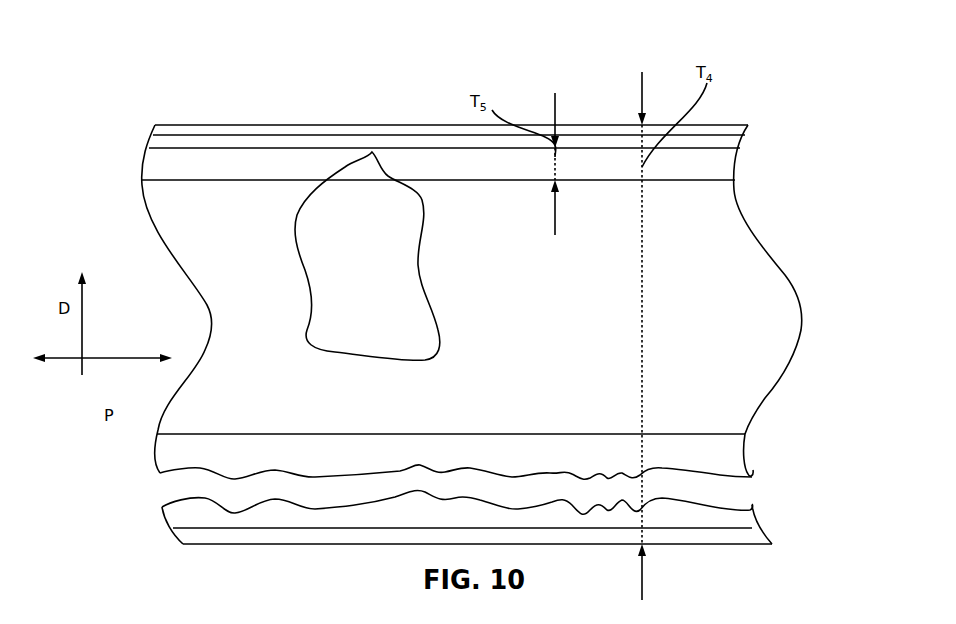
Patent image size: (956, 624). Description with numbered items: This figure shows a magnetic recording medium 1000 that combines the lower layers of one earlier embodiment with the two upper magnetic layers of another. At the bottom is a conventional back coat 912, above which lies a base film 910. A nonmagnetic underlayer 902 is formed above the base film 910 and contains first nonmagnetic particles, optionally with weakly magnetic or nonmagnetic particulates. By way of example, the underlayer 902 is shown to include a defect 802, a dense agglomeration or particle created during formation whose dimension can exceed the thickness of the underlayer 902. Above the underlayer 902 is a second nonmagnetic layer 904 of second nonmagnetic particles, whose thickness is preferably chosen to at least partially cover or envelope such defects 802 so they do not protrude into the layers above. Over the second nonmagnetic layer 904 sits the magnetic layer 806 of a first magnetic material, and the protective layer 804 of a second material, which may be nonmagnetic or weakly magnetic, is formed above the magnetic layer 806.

The magnetic recording medium 1000 is at (110, 60).
The defect 802 is at (367, 256).
The protective layer 804 is at (747, 127).
The magnetic layer 806 is at (740, 141).
The second nonmagnetic layer 904 is at (735, 165).
The nonmagnetic underlayer 902 is at (778, 262).
The base film 910 is at (753, 468).
The back coat 912 is at (773, 540).